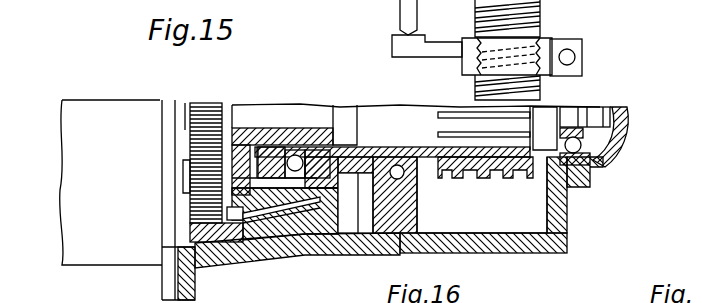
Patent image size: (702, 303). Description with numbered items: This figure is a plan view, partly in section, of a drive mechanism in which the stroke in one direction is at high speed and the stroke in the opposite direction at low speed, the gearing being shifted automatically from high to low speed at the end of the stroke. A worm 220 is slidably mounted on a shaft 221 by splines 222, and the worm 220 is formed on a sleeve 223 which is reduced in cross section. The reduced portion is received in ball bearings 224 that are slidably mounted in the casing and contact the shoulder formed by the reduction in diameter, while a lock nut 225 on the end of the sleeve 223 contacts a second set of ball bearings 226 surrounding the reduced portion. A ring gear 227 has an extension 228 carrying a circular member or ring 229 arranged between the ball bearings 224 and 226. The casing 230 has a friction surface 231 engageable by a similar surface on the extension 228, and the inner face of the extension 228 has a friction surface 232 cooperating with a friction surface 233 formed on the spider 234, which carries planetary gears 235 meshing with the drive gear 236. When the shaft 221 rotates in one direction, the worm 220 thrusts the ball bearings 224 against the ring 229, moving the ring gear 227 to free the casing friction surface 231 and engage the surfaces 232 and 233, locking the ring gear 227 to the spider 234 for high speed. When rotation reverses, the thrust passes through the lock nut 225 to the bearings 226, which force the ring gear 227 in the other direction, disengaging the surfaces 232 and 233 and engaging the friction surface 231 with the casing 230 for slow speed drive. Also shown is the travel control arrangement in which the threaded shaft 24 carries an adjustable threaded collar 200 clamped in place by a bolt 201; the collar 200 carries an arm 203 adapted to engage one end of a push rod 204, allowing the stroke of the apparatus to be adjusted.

The threaded shaft 24 is at (485, 4).
The threaded collar 200 is at (548, 40).
The bolt 201 is at (573, 56).
The arm 203 is at (392, 42).
The push rod 204 is at (400, 13).
The worm 220 is at (472, 178).
The shaft 221 is at (378, 118).
The splines 222 is at (555, 107).
The sleeve 223 is at (354, 110).
The ball bearings 224 is at (405, 252).
The lock nut 225 is at (238, 118).
The second set of ball bearings 226 is at (296, 150).
The ring gear 227 is at (221, 228).
The extension 228 is at (268, 240).
The ring 229 is at (357, 235).
The casing 230 is at (527, 255).
The friction surface 231 is at (316, 236).
The friction surface 232 is at (308, 240).
The friction surface 233 is at (289, 240).
The spider 234 is at (233, 108).
The planetary gears 235 is at (183, 200).
The drive gear 236 is at (183, 102).